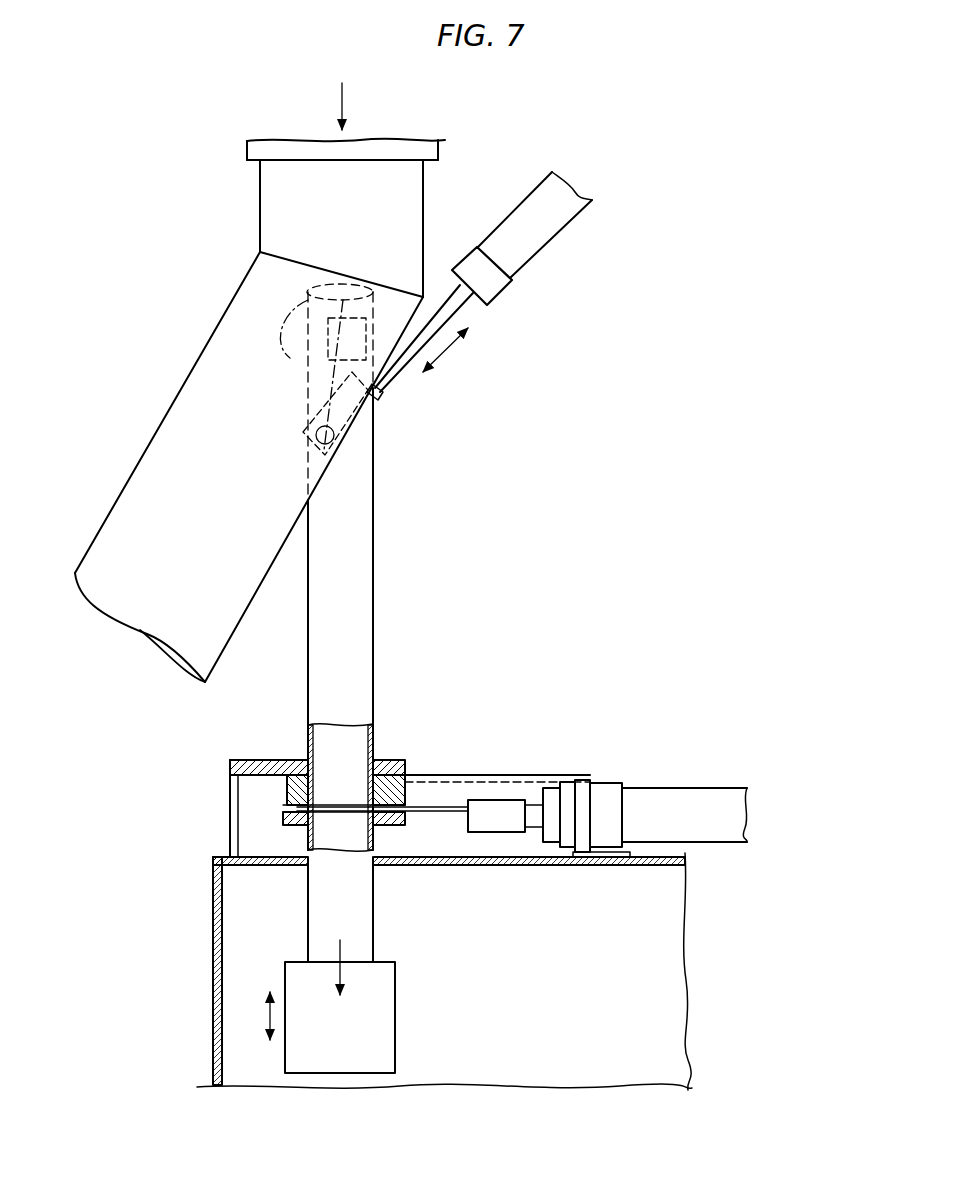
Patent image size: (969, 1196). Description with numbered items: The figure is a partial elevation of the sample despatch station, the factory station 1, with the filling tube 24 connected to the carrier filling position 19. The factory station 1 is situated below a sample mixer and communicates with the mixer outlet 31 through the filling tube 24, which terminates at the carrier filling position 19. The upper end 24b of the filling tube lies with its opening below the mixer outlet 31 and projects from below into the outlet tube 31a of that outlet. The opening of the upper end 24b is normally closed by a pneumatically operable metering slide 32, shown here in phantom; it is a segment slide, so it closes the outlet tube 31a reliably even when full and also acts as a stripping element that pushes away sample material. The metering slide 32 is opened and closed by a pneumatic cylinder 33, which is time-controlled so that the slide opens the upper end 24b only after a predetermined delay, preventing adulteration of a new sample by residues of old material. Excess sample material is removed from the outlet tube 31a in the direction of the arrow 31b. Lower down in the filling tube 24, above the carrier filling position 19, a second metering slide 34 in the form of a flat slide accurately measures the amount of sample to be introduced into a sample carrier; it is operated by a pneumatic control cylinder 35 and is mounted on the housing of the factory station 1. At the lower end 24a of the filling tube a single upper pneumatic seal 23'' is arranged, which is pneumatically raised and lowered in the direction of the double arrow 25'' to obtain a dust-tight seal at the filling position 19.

The mixer outlet 31 is at (437, 150).
The outlet tube 31a is at (272, 205).
The arrow 31b is at (235, 460).
The metering slide 32 is at (347, 276).
The upper end of the filling tube 24b is at (368, 307).
The pneumatic cylinder 33 is at (507, 283).
The filling tube 24 is at (376, 543).
The second metering slide 34 is at (376, 790).
The pneumatic control cylinder 35 is at (605, 780).
The factory station 1 is at (211, 967).
The lower end of the filling tube 24a is at (368, 940).
The upper pneumatic seal 23'' is at (370, 1017).
The double arrow 25'' is at (248, 1016).
The carrier filling position 19 is at (408, 1042).